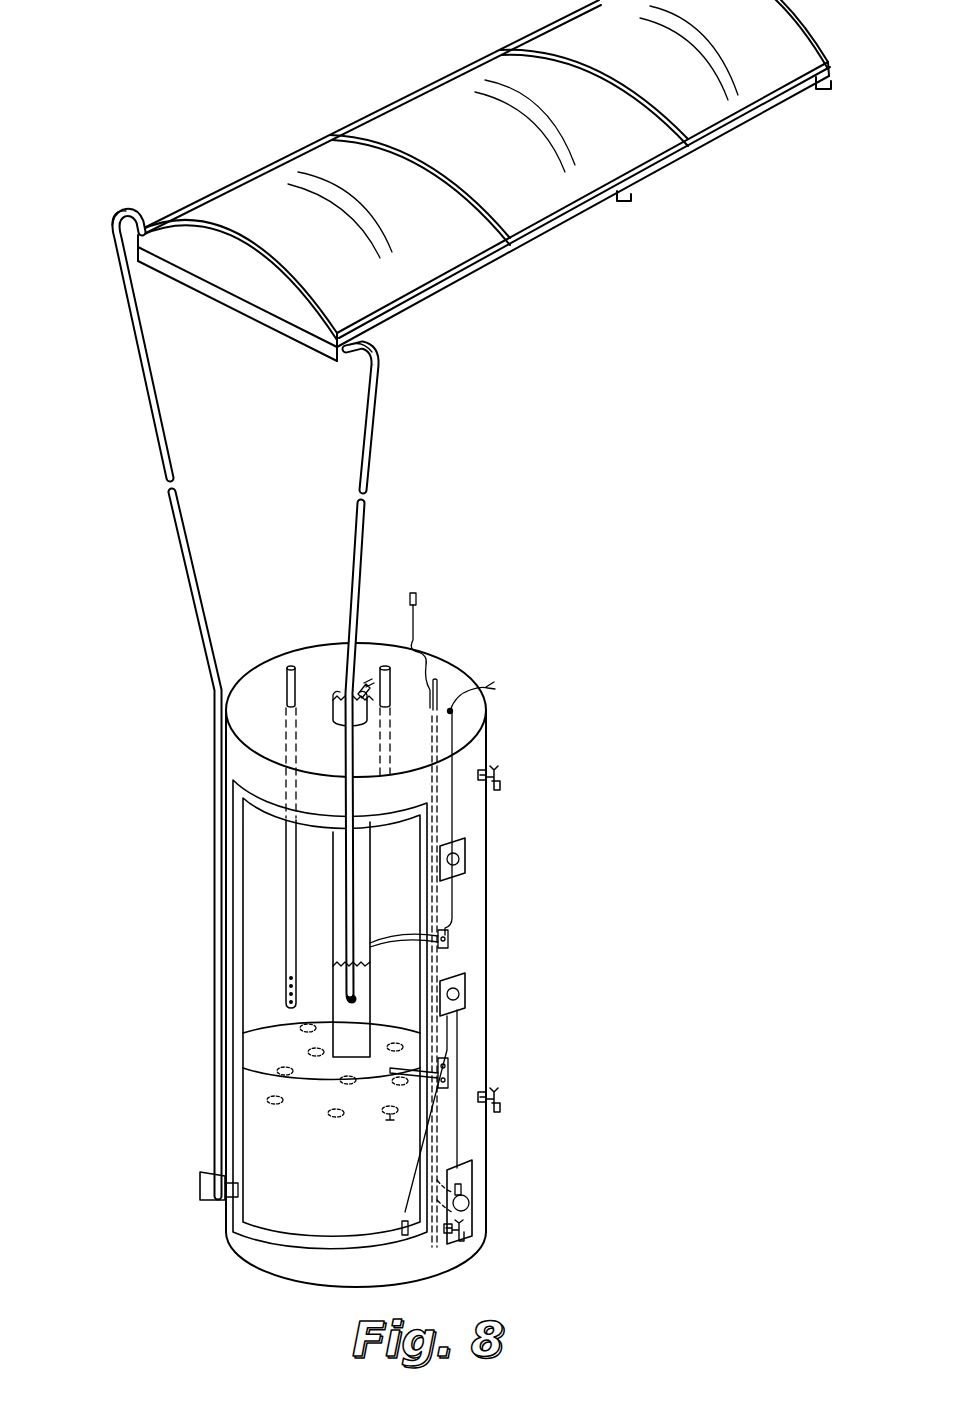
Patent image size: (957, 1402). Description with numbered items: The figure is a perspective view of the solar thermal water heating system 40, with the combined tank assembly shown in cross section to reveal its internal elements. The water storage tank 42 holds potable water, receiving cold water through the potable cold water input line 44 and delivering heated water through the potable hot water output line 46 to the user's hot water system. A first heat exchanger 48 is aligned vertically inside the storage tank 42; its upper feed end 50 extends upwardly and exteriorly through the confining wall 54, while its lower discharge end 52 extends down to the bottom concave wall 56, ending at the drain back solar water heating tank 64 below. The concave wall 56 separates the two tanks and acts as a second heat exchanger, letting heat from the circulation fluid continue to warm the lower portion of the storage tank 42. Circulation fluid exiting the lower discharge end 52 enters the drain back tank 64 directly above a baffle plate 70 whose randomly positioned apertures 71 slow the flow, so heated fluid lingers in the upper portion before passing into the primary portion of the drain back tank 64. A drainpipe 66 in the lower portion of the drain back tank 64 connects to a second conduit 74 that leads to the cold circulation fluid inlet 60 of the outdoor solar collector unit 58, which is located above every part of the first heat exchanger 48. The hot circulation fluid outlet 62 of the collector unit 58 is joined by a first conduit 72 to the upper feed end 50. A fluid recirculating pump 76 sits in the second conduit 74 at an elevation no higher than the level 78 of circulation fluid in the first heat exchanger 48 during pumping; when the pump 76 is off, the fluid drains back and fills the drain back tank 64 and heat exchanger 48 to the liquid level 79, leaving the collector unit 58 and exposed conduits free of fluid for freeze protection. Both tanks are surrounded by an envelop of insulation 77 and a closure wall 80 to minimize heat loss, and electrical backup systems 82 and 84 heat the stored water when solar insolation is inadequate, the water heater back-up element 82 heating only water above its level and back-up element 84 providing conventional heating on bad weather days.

The solar thermal water heating system 40 is at (510, 590).
The water storage tank 42 is at (248, 934).
The potable cold water input line 44 is at (278, 667).
The potable hot water output line 46 is at (384, 665).
The first heat exchanger 48 is at (371, 892).
The upper feed end 50 is at (352, 612).
The lower discharge end 52 is at (345, 1062).
The confining wall 54 is at (242, 716).
The bottom concave wall 56 is at (258, 1060).
The solar collector unit 58 is at (345, 82).
The cold circulation fluid inlet 60 is at (137, 212).
The hot circulation fluid outlet 62 is at (380, 344).
The drain back solar water heating tank 64 is at (323, 1205).
The drainpipe 66 is at (240, 1192).
The baffle plate 70 is at (322, 1121).
The apertures 71 is at (300, 1028).
The first conduit 72 is at (372, 398).
The second conduit 74 is at (142, 375).
The fluid recirculating pump 76 is at (198, 1202).
The envelop of insulation 77 is at (432, 831).
The level of circulation fluid 78 is at (336, 963).
The liquid level 79 is at (340, 695).
The closure wall 80 is at (466, 882).
The water heater back-up element 82 is at (449, 936).
The back-up element 84 is at (449, 1069).